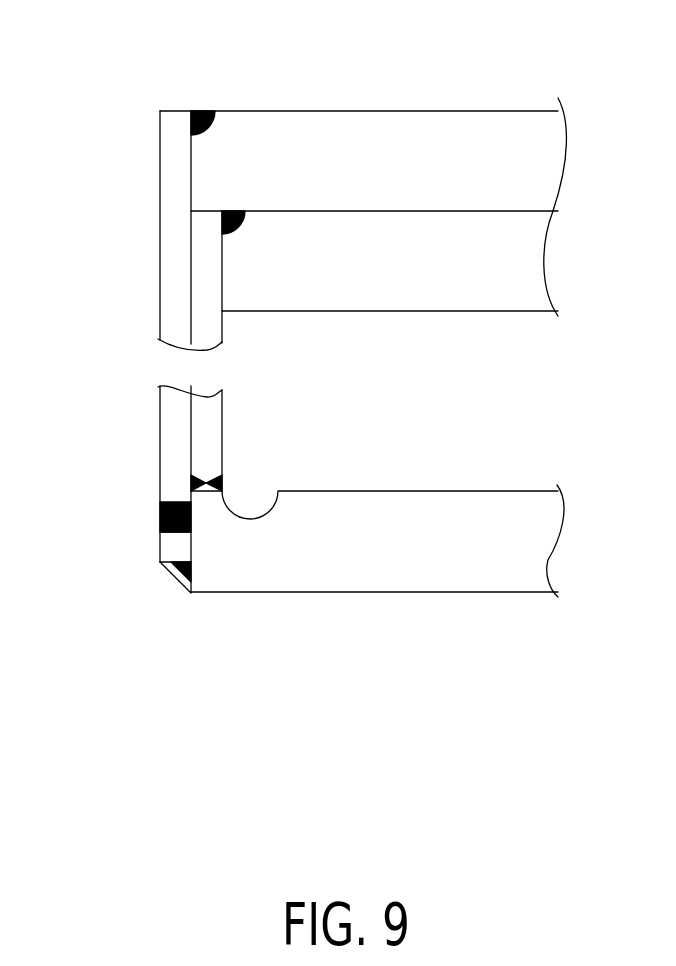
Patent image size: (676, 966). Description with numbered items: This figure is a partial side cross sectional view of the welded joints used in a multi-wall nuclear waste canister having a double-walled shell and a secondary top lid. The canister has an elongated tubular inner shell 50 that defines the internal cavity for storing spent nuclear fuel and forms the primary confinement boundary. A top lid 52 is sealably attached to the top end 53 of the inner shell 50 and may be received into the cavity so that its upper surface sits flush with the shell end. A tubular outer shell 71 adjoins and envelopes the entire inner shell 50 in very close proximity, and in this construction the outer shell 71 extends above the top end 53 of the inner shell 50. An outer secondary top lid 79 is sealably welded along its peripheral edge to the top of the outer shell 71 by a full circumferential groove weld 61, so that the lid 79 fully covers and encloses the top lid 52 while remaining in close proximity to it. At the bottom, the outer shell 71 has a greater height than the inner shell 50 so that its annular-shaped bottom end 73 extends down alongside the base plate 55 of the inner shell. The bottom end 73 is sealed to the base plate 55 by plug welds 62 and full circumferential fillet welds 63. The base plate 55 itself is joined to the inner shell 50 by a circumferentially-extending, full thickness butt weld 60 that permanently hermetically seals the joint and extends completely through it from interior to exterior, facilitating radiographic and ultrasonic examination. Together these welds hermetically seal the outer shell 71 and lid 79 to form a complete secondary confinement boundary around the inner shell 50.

The outer secondary top lid 79 is at (382, 111).
The top lid 52 is at (447, 211).
The top end 53 is at (218, 211).
The full circumferential groove weld 61 is at (200, 110).
The outer shell 71 is at (160, 315).
The inner shell 50 is at (223, 327).
The butt weld 60 is at (222, 484).
The base plate 55 is at (433, 515).
The plug welds 62 is at (160, 519).
The bottom end 73 is at (175, 559).
The full circumferential fillet welds 63 is at (177, 577).